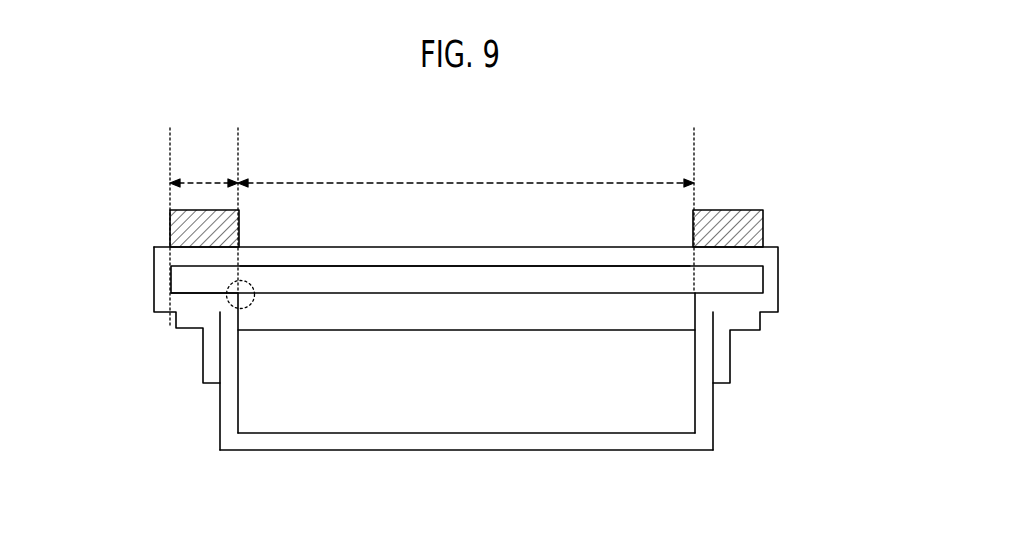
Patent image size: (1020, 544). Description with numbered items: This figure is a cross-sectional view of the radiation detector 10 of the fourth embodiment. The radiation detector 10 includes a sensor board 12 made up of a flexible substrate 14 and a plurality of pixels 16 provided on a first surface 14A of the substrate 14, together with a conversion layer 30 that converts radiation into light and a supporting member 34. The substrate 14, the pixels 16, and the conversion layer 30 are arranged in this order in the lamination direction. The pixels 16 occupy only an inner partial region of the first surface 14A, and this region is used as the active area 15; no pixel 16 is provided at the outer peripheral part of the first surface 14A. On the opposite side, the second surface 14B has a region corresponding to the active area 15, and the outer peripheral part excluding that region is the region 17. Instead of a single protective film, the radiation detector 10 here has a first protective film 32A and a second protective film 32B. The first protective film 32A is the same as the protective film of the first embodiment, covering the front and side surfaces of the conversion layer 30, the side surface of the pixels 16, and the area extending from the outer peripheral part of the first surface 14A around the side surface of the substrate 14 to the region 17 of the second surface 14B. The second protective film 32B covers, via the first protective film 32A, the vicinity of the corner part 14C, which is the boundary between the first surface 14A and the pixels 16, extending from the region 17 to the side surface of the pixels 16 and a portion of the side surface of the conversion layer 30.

The radiation detector 10 is at (818, 520).
The sensor board 12 is at (818, 260).
The substrate 14 is at (755, 275).
The first surface 14A is at (214, 294).
The second surface 14B is at (430, 266).
The corner part 14C is at (231, 305).
The active area 15 is at (466, 210).
The pixels 16 is at (683, 320).
The region 17 is at (204, 228).
The conversion layer 30 is at (685, 393).
The first protective film 32A is at (459, 440).
The second protective film 32B is at (218, 372).
The supporting member 34 is at (736, 223).